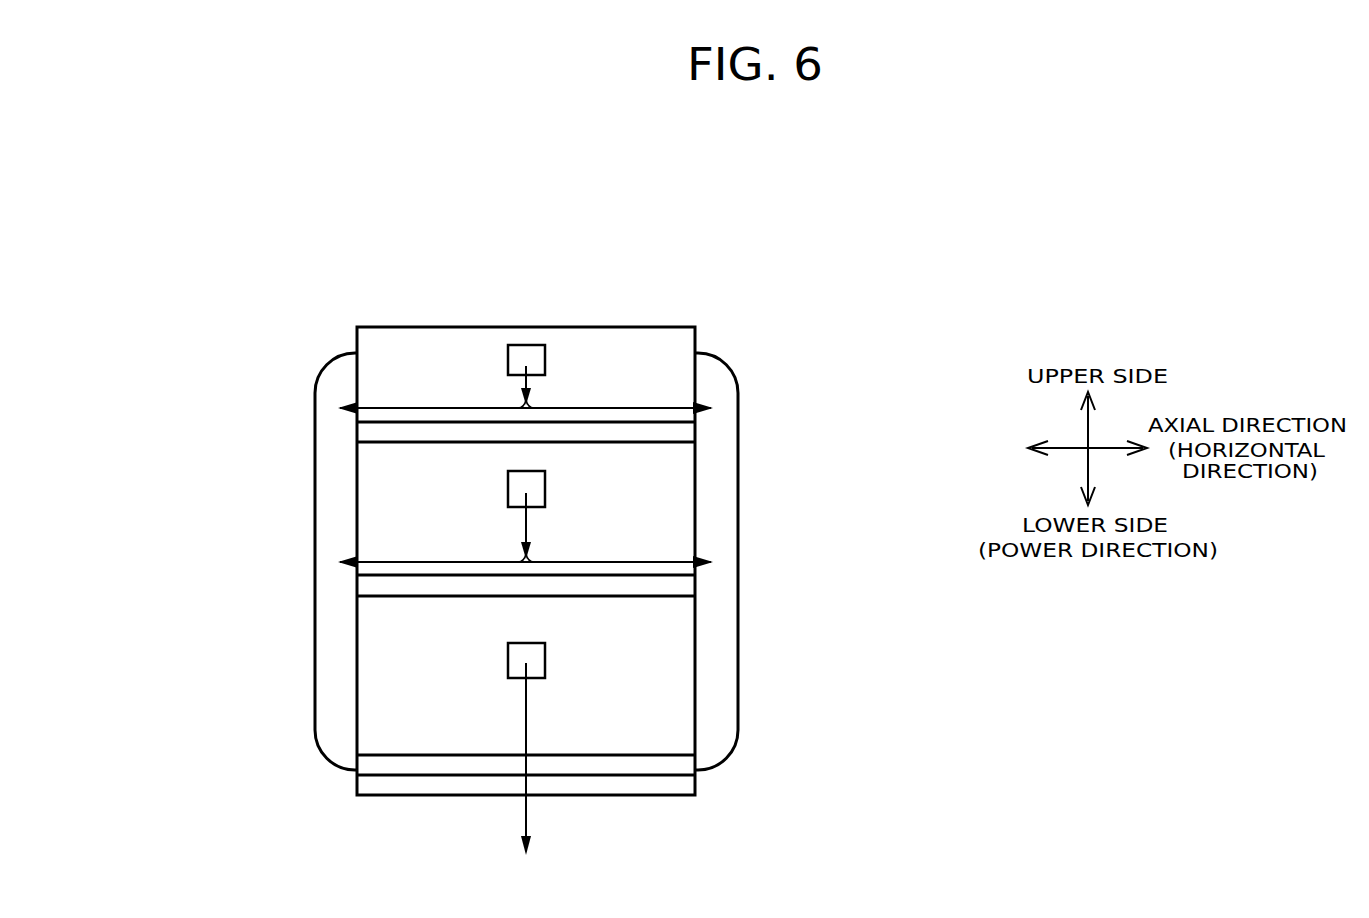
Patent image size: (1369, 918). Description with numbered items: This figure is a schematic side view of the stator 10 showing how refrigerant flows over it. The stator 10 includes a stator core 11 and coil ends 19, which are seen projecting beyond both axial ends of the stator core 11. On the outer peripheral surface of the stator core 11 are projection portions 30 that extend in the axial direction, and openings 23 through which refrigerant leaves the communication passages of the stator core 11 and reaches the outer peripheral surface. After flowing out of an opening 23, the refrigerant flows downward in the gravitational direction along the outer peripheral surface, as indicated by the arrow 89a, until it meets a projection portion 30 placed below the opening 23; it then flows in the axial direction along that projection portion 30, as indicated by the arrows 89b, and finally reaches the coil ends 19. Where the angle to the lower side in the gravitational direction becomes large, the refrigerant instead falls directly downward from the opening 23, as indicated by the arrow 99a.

The stator 10 is at (205, 303).
The stator core 11 is at (660, 326).
The coil ends 19 is at (740, 453).
The opening 23 is at (527, 345).
The projection portion 30 is at (433, 443).
The arrow 89a is at (517, 392).
The arrows 89b is at (410, 407).
The arrow 99a is at (528, 813).